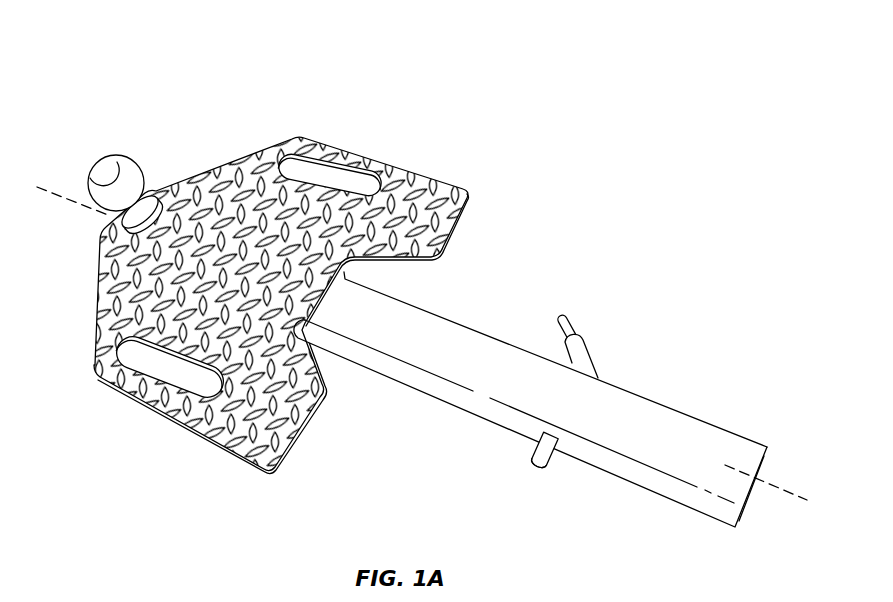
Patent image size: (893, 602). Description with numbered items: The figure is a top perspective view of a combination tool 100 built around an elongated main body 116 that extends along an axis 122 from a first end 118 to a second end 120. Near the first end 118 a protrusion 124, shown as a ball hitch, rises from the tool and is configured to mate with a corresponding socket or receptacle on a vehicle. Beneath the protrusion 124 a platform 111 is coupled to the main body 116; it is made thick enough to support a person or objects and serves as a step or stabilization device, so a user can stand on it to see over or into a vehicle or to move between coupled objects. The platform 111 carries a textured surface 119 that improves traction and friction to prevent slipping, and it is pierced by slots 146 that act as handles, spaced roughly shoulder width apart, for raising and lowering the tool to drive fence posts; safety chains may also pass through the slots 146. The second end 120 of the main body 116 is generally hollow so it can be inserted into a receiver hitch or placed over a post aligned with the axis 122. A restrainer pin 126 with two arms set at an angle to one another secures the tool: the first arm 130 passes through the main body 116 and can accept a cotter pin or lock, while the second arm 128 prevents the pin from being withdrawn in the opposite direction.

The combination tool 100 is at (127, 74).
The platform 111 is at (233, 187).
The main body 116 is at (435, 323).
The first end 118 is at (202, 462).
The surface 119 is at (417, 203).
The second end 120 is at (652, 514).
The axis 122 is at (91, 213).
The protrusion 124 is at (128, 174).
The restrainer pin 126 is at (600, 338).
The second arm 128 is at (573, 353).
The first arm 130 is at (531, 452).
The slots 146 is at (320, 153).